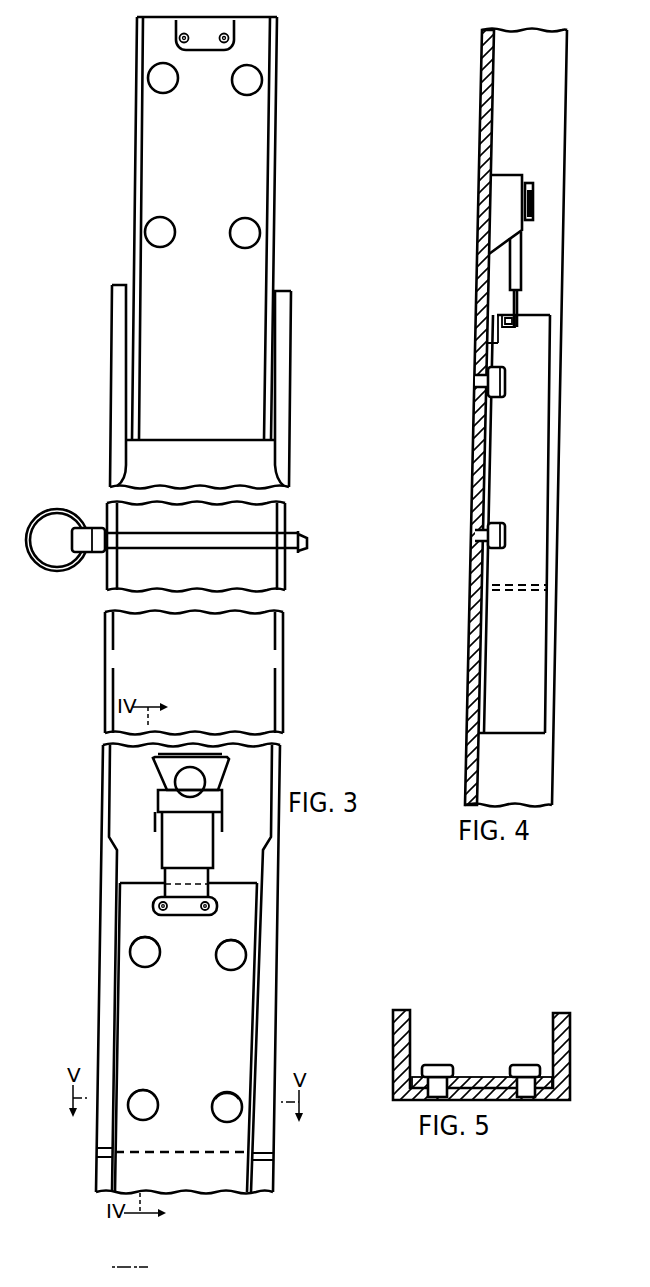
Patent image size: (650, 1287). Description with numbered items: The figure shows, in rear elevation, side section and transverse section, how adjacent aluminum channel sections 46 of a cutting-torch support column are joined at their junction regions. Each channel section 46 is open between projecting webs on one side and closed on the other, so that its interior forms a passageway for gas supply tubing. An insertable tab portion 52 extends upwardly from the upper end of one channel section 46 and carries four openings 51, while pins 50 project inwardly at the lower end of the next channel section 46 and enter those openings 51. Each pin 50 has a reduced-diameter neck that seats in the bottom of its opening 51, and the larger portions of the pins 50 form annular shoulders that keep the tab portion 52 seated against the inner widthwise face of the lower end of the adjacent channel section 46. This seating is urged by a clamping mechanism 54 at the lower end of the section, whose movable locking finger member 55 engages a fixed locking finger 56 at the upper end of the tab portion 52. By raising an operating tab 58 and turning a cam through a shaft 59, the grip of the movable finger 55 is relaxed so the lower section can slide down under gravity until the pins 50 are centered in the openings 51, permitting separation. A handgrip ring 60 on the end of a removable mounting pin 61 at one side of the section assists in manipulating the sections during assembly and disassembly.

In FIG. 3, the channel section 46 is at (278, 463).
In FIG. 5, the channel section 46 is at (398, 1053).
In FIG. 3, the pin 50 is at (231, 953).
In FIG. 4, the pin 50 is at (487, 378).
In FIG. 5, the pin 50 is at (438, 1070).
In FIG. 3, the opening 51 is at (160, 78).
In FIG. 3, the insertable tab portion 52 is at (232, 180).
In FIG. 3, the clamping mechanism 54 is at (215, 803).
In FIG. 4, the clamping mechanism 54 is at (503, 217).
In FIG. 3, the movable locking finger member 55 is at (205, 878).
In FIG. 4, the movable locking finger member 55 is at (520, 310).
In FIG. 3, the fixed locking finger 56 is at (172, 890).
In FIG. 4, the fixed locking finger 56 is at (492, 347).
In FIG. 3, the operating tab 58 is at (218, 773).
In FIG. 4, the operating tab 58 is at (530, 186).
In FIG. 3, the shaft 59 is at (190, 778).
In FIG. 4, the shaft 59 is at (533, 206).
In FIG. 3, the handgrip ring 60 is at (58, 506).
In FIG. 3, the removable mounting pin 61 is at (253, 542).